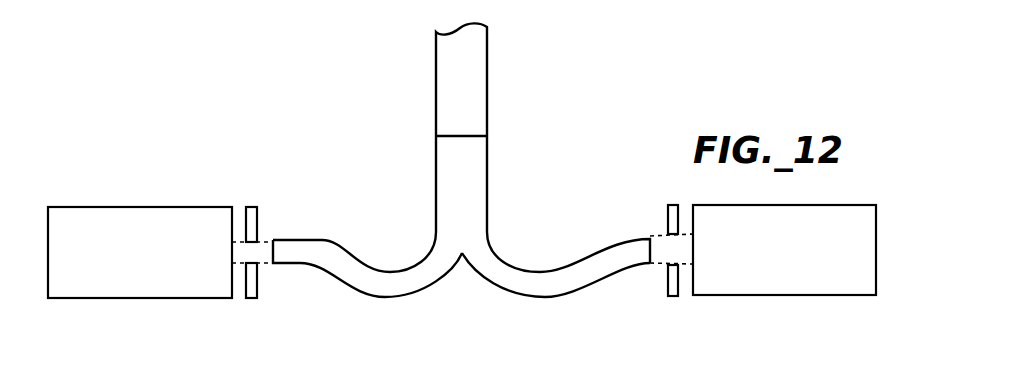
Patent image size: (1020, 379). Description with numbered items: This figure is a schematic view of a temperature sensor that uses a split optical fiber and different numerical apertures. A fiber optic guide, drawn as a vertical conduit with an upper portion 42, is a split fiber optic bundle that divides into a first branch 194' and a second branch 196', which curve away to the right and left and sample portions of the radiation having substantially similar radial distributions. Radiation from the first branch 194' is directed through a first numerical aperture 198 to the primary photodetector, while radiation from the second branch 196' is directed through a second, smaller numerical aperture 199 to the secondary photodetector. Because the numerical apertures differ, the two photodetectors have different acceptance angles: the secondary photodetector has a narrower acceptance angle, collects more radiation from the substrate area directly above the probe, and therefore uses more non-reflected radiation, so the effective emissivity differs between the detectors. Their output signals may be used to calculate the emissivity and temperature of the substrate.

The second numerical aperture 199 is at (257, 283).
The second branch 196' is at (367, 247).
The first branch 194' is at (556, 247).
The outlet conduit 42 is at (486, 90).
The first numerical aperture 198 is at (668, 284).